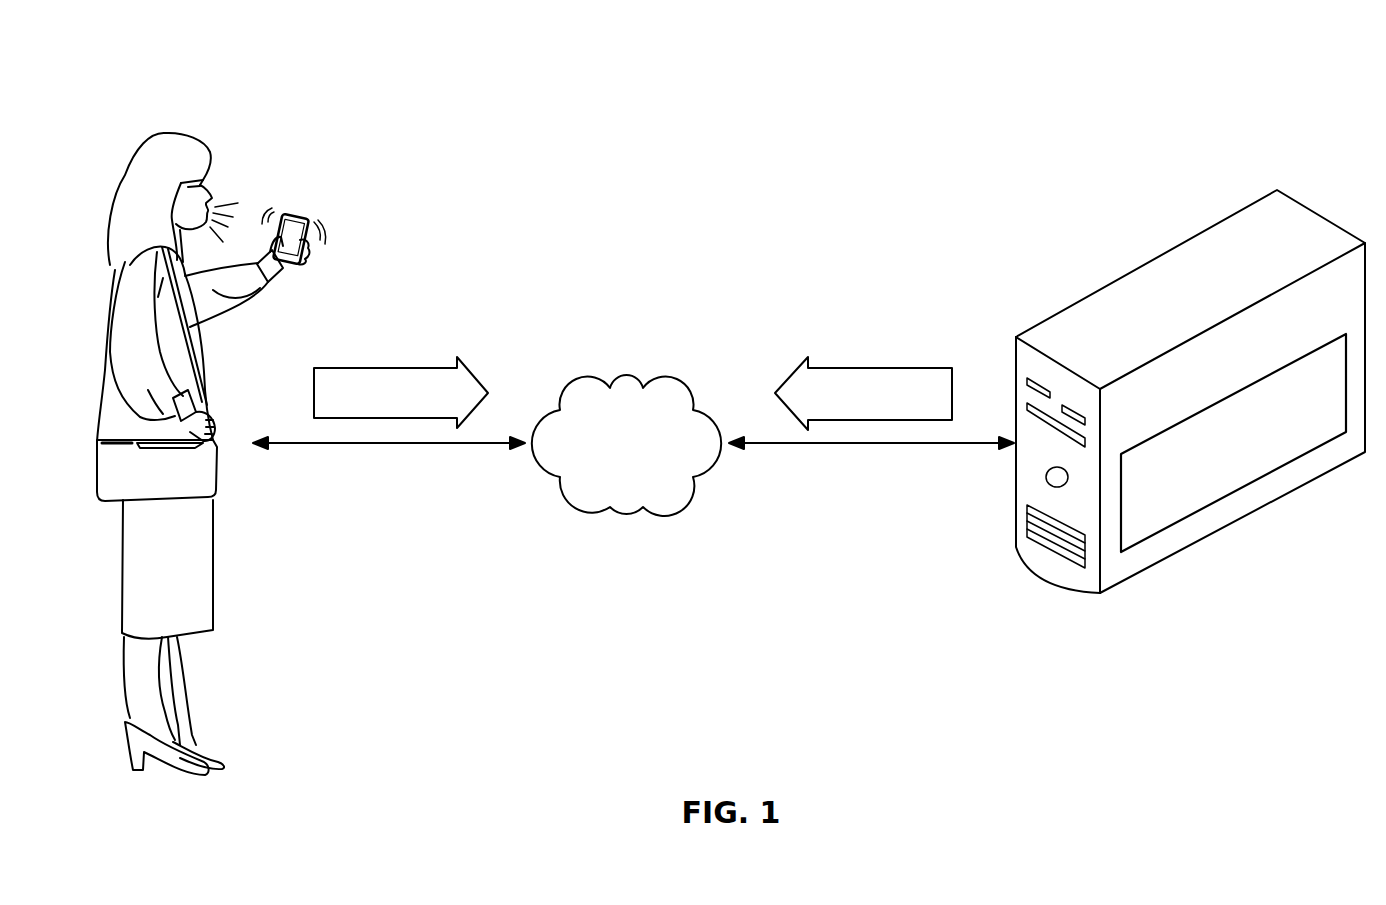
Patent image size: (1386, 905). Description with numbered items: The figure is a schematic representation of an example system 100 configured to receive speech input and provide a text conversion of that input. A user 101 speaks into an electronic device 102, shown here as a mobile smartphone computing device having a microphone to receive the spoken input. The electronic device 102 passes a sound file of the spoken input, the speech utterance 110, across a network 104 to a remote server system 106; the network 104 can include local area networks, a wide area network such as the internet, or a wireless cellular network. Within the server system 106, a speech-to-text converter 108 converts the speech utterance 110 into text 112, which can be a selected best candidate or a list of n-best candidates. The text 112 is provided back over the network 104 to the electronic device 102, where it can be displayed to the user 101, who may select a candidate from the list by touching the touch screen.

The system 100 is at (996, 77).
The user 101 is at (168, 132).
The electronic device 102 is at (298, 214).
The network 104 is at (625, 512).
The server system 106 is at (1047, 572).
The speech-to-text converter 108 is at (1147, 526).
The speech utterance 110 is at (400, 368).
The text 112 is at (870, 368).